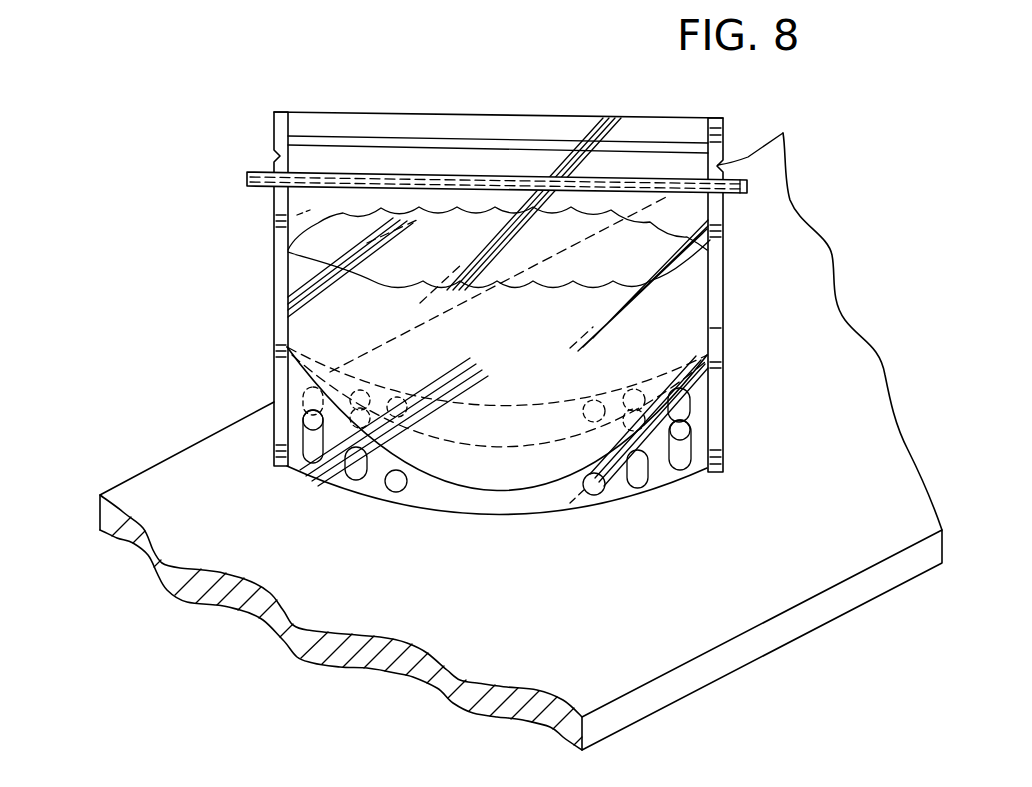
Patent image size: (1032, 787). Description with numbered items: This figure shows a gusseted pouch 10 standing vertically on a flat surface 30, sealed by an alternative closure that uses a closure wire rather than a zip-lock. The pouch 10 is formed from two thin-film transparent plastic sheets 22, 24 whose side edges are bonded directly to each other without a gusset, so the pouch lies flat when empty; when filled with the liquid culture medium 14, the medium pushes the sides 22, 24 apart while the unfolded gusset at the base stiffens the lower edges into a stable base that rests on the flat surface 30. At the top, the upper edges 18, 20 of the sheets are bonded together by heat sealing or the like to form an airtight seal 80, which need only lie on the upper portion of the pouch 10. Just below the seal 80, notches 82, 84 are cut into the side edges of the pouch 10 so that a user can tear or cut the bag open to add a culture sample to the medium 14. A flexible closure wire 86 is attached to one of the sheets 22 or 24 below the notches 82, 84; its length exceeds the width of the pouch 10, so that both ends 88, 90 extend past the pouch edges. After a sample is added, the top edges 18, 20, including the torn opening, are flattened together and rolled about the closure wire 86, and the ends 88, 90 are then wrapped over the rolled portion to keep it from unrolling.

The gusseted pouch 10 is at (498, 257).
The liquid culture medium 14 is at (345, 243).
The upper edge 18 is at (590, 114).
The upper edge 20 is at (504, 104).
The transparent plastic sheet 22 is at (690, 337).
The transparent plastic sheet 24 is at (277, 210).
The flat surface 30 is at (536, 633).
The airtight seal 80 is at (678, 143).
The notch 82 is at (280, 157).
The notch 84 is at (718, 165).
The flexible closure wire 86 is at (475, 180).
The closure wire end 88 is at (748, 187).
The closure wire end 90 is at (498, 129).